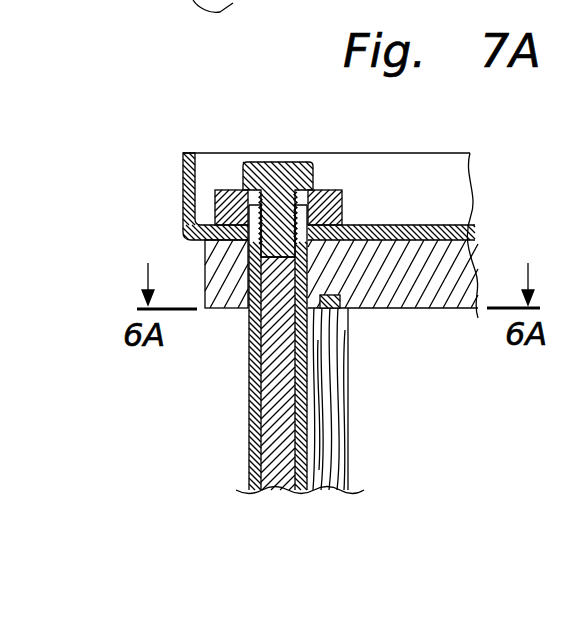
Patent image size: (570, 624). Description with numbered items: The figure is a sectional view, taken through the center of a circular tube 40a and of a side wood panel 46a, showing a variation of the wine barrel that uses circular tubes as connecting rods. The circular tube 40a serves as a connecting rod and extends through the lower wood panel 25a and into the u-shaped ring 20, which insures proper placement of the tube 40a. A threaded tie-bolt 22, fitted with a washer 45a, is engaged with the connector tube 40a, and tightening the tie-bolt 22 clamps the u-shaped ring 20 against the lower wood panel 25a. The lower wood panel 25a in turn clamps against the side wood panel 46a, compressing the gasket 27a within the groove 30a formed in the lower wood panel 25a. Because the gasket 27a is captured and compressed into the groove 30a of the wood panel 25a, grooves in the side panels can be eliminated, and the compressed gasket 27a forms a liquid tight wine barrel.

The u-shaped ring 20 is at (220, 168).
The threaded tie-bolt 22 is at (297, 162).
The washer 45a is at (343, 192).
The gasket 27a is at (371, 228).
The lower wood panel 25a is at (459, 266).
The groove 30a is at (336, 305).
The circular tube 40a is at (250, 389).
The side wood panel 46a is at (337, 418).